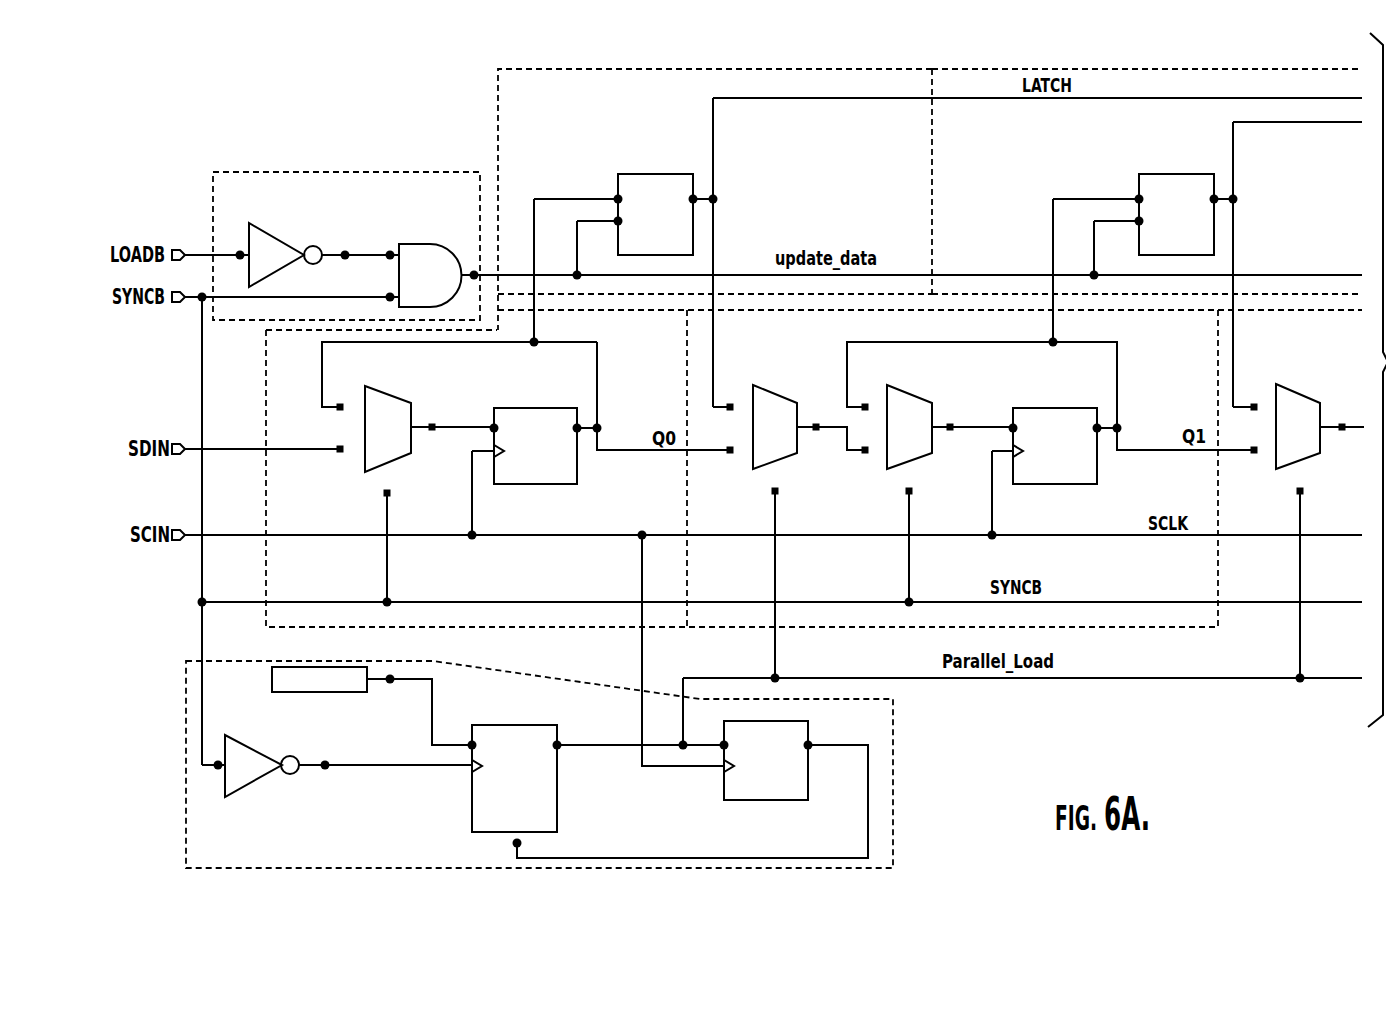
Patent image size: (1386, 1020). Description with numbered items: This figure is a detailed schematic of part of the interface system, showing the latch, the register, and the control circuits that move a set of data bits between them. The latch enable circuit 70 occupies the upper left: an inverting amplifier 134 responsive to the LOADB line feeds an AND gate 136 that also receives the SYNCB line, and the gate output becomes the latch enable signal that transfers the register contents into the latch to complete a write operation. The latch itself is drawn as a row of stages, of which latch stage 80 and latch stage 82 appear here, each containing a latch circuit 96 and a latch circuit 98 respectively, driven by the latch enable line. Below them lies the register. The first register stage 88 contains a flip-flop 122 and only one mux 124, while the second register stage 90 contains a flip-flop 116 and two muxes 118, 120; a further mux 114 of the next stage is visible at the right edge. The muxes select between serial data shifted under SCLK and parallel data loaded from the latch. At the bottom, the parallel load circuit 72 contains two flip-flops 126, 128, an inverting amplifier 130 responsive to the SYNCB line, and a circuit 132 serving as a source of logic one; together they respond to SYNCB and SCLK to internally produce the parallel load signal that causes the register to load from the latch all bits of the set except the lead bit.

The latch enable circuit 70 is at (365, 170).
The latch stage 80 is at (737, 68).
The latch stage 82 is at (1108, 67).
The latch circuit 96 is at (686, 186).
The latch circuit 98 is at (1207, 186).
The inverting amplifier 134 is at (270, 230).
The AND gate 136 is at (410, 255).
The mux 124 is at (402, 383).
The flip-flop 122 is at (562, 405).
The mux 120 is at (788, 397).
The mux 118 is at (910, 393).
The flip-flop 116 is at (1078, 405).
The mux 114 is at (1305, 393).
The register stage 88 is at (562, 580).
The register stage 90 is at (1126, 575).
The parallel load circuit 72 is at (893, 728).
The circuit 132 is at (290, 693).
The inverting amplifier 130 is at (250, 775).
The flip-flop 128 is at (557, 795).
The flip-flop 126 is at (758, 800).